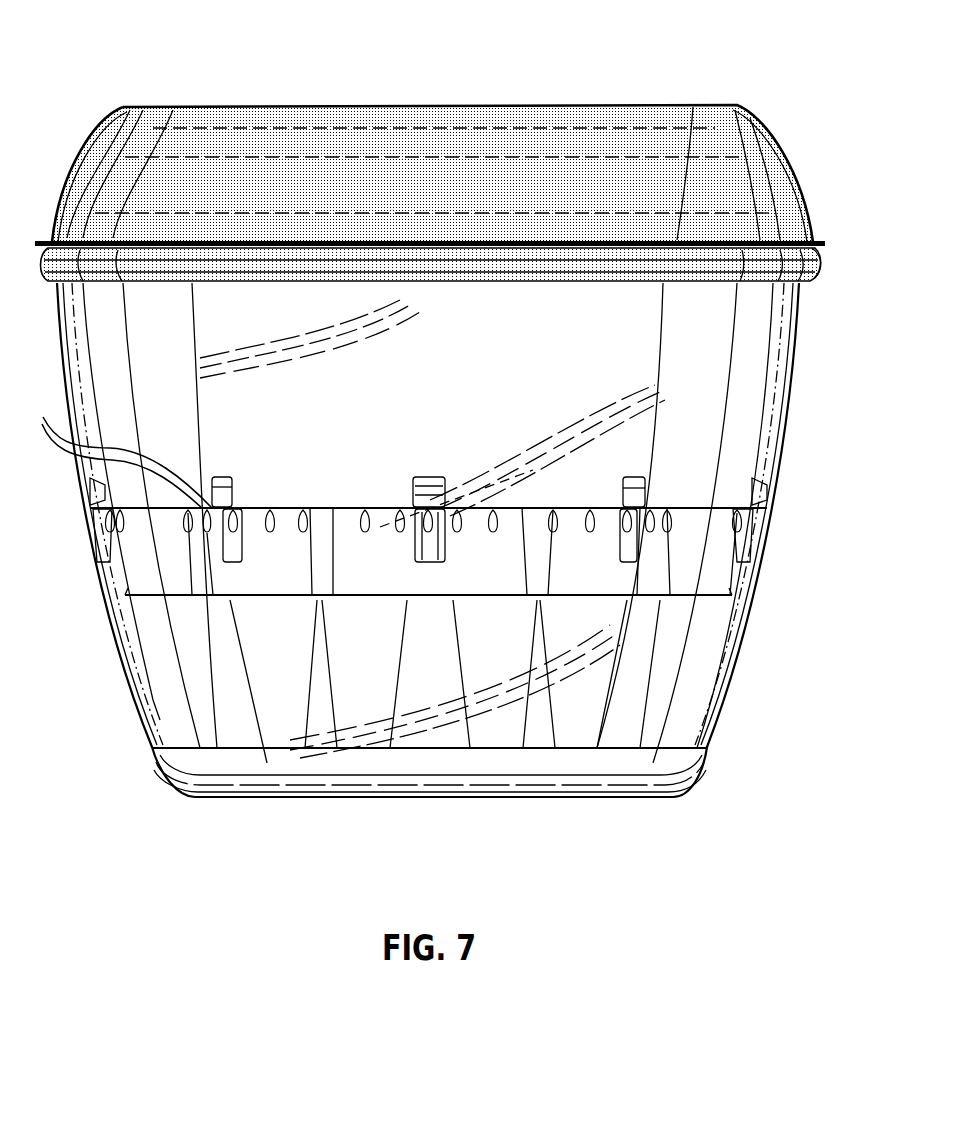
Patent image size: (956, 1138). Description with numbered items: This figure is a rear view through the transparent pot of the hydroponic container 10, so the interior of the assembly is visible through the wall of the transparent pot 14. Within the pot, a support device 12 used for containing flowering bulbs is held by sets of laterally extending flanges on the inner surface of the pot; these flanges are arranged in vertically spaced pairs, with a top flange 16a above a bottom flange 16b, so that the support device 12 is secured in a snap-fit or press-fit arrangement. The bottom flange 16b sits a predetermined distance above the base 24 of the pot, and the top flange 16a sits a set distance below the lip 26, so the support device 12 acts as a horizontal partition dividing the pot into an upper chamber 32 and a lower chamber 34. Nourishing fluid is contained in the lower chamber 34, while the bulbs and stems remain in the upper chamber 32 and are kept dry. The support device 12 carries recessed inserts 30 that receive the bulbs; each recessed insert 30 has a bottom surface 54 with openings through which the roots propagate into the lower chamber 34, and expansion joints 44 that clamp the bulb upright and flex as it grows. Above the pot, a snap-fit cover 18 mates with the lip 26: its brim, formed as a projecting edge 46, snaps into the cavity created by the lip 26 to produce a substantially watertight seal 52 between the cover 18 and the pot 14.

The hydroponic container 10 is at (103, 60).
The support device 12 is at (147, 575).
The transparent pot 14 is at (775, 713).
The top flange 16a is at (90, 487).
The bottom flange 16b is at (92, 532).
The snap-fit cover 18 is at (785, 173).
The base 24 is at (670, 797).
The lip 26 is at (38, 262).
The recessed insert 30 is at (723, 580).
The upper chamber 32 is at (283, 399).
The lower chamber 34 is at (283, 663).
The expansion joint 44 is at (400, 478).
The projecting edge 46 is at (38, 241).
The watertight seal 52 is at (826, 252).
The bottom surface 54 is at (179, 596).